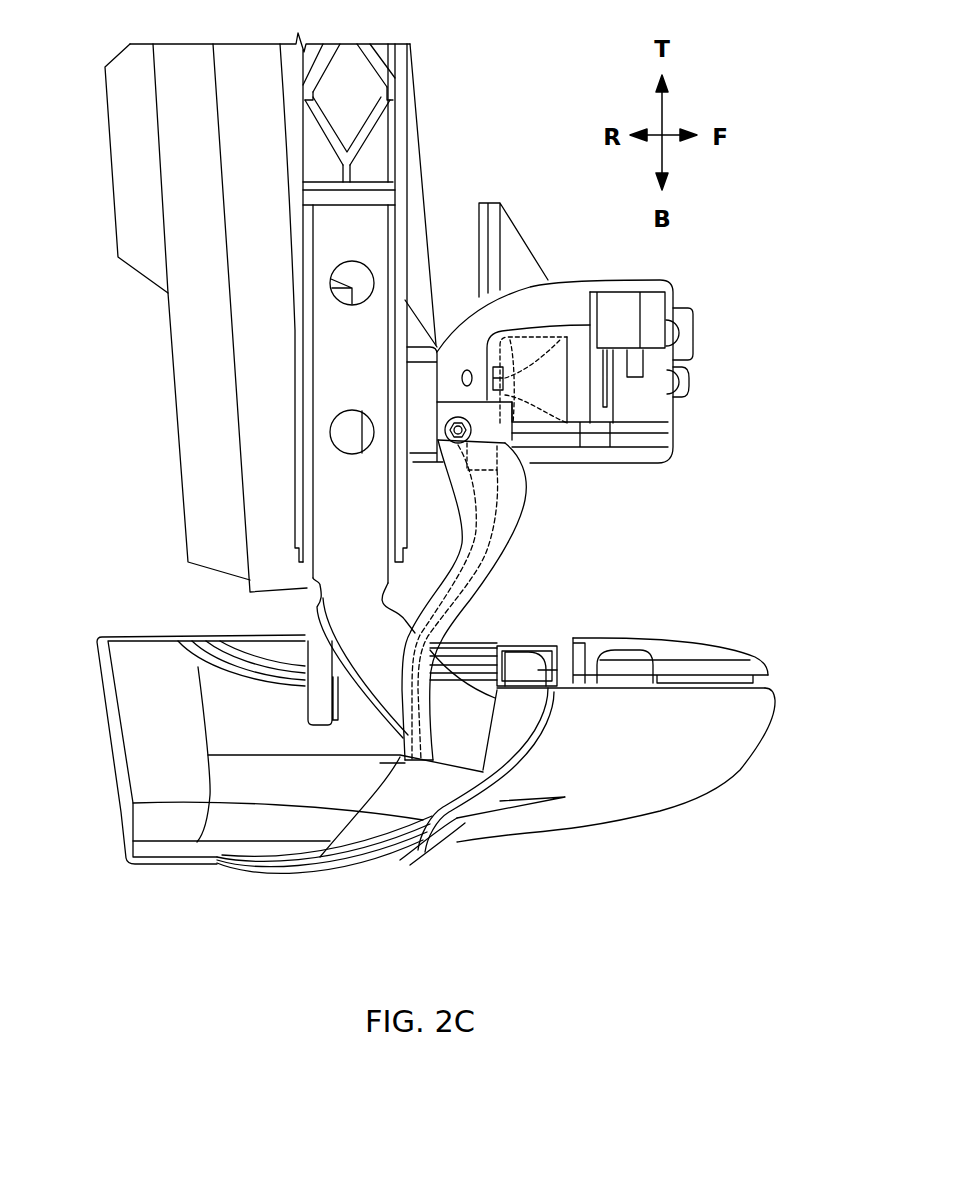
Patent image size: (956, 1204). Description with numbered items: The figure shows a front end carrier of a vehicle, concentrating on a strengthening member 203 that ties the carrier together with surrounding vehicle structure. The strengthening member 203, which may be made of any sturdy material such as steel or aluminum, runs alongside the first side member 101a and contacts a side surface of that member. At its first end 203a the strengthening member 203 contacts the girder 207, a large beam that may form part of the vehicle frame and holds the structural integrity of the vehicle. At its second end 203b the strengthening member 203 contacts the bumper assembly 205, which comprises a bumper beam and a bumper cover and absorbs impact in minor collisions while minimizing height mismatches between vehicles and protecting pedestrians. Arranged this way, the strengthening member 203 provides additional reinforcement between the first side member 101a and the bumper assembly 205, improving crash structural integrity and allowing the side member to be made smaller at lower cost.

The first side member 101a is at (362, 528).
The girder 207 is at (623, 285).
The first end 203a is at (470, 433).
The strengthening member 203 is at (492, 513).
The second end 203b is at (435, 722).
The bumper assembly 205 is at (612, 745).